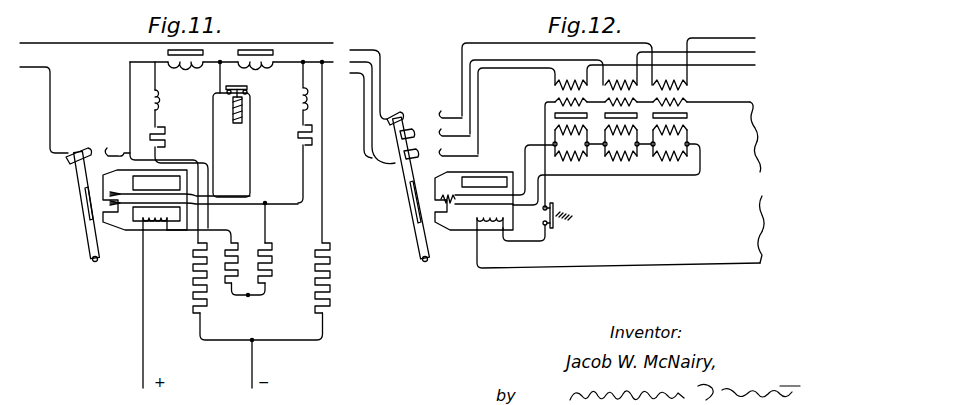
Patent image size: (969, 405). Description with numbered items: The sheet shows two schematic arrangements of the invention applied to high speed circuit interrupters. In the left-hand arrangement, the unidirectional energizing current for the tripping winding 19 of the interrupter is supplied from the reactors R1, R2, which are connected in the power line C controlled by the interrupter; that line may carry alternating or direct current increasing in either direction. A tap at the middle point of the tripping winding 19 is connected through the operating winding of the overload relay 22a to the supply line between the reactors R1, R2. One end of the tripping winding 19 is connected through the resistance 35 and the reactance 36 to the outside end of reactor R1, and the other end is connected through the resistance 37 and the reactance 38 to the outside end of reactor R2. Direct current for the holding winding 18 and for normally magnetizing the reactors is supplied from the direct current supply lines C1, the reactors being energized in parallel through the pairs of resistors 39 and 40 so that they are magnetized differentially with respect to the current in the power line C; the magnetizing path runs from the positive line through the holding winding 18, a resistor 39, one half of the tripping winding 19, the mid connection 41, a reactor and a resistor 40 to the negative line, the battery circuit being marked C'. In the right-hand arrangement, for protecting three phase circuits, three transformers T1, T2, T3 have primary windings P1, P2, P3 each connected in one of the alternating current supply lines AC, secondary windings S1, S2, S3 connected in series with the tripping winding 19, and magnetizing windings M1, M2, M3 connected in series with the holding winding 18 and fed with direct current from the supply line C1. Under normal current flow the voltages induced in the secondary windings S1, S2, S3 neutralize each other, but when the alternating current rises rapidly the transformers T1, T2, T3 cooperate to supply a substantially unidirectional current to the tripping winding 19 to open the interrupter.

In FIG. 11, the holding winding 18 is at (153, 235).
In FIG. 12, the holding winding 18 is at (492, 232).
In FIG. 11, the tripping winding 19 is at (125, 227).
In FIG. 12, the tripping winding 19 is at (458, 228).
In FIG. 11, the overload relay 22a is at (243, 108).
In FIG. 11, the resistance 35 is at (312, 127).
In FIG. 11, the reactance 36 is at (310, 95).
In FIG. 11, the resistance 37 is at (165, 134).
In FIG. 11, the reactance 38 is at (160, 100).
In FIG. 11, the resistors 39 is at (258, 243).
In FIG. 11, the resistors 40 is at (320, 305).
In FIG. 11, the mid connection 41 is at (249, 156).
In FIG. 11, the reactor R1 is at (265, 68).
In FIG. 11, the reactor R2 is at (180, 68).
In FIG. 11, the power line C is at (290, 53).
In FIG. 11, the battery circuit C' is at (197, 363).
In FIG. 12, the direct current supply lines C1 is at (760, 182).
In FIG. 12, the alternating current supply lines AC is at (755, 38).
In FIG. 12, the primary winding P1 is at (571, 75).
In FIG. 12, the primary winding P2 is at (621, 71).
In FIG. 12, the primary winding P3 is at (679, 80).
In FIG. 12, the magnetizing winding M1 is at (555, 102).
In FIG. 12, the magnetizing winding M2 is at (605, 102).
In FIG. 12, the magnetizing winding M3 is at (687, 102).
In FIG. 12, the secondary winding S1 is at (555, 128).
In FIG. 12, the secondary winding S2 is at (605, 130).
In FIG. 12, the secondary winding S3 is at (687, 128).
In FIG. 12, the transformer T1 is at (571, 172).
In FIG. 12, the transformer T2 is at (621, 172).
In FIG. 12, the transformer T3 is at (670, 171).